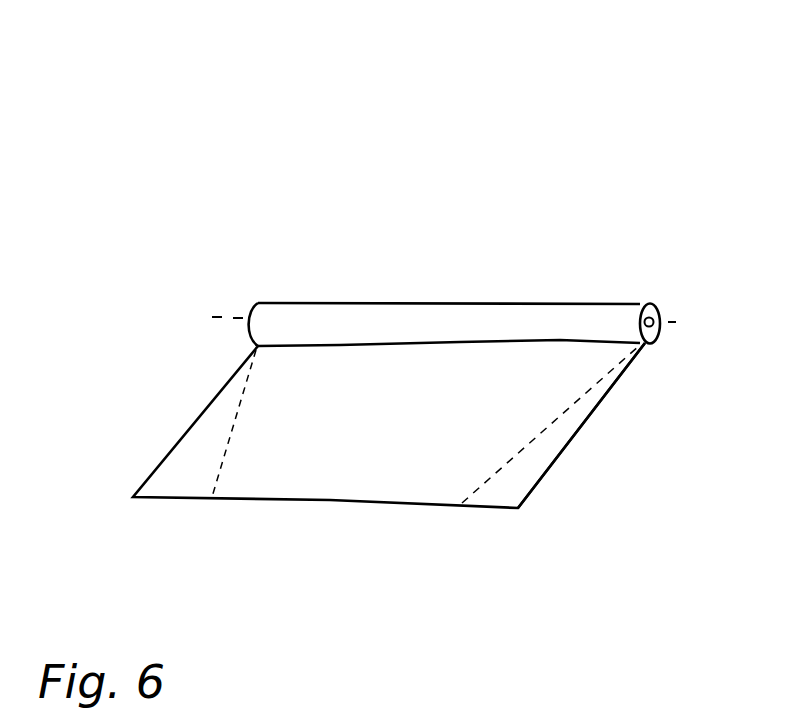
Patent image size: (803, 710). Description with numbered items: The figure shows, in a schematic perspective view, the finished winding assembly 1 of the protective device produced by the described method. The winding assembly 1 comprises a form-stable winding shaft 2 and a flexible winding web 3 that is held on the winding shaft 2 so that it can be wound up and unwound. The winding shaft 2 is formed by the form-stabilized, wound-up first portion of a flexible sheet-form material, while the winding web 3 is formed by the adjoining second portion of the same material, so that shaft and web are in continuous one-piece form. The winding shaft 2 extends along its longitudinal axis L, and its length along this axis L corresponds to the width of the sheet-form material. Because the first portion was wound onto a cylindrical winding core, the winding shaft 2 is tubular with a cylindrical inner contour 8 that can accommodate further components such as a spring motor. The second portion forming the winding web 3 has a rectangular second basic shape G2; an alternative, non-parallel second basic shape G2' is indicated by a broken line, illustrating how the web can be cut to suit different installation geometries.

The winding assembly 1 is at (329, 168).
The winding shaft 2 is at (422, 312).
The winding web 3 is at (192, 455).
The inner contour 8 is at (652, 328).
The longitudinal axis L is at (690, 322).
The second basic shape G2 is at (581, 425).
The alternative second basic shape G2' is at (572, 424).